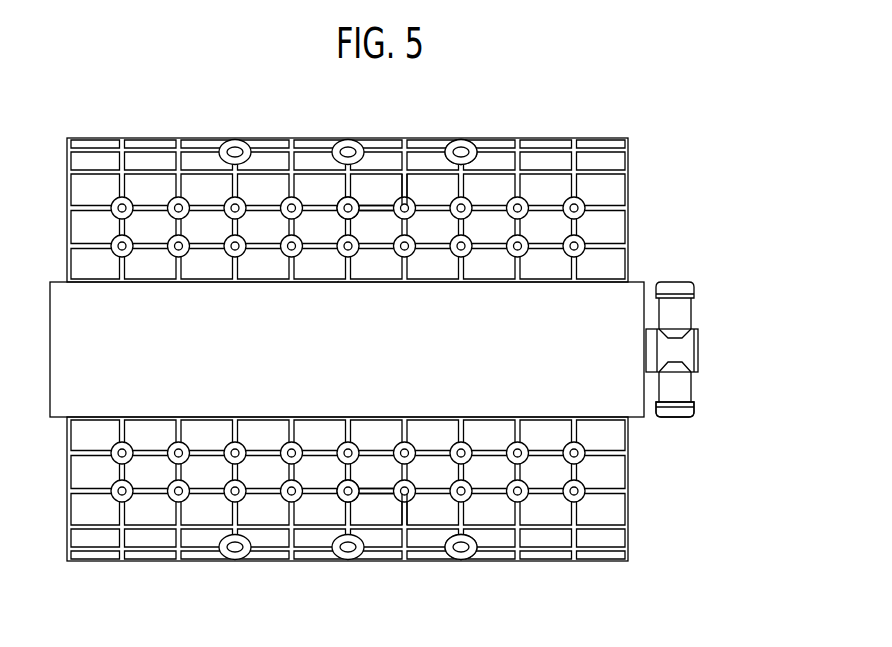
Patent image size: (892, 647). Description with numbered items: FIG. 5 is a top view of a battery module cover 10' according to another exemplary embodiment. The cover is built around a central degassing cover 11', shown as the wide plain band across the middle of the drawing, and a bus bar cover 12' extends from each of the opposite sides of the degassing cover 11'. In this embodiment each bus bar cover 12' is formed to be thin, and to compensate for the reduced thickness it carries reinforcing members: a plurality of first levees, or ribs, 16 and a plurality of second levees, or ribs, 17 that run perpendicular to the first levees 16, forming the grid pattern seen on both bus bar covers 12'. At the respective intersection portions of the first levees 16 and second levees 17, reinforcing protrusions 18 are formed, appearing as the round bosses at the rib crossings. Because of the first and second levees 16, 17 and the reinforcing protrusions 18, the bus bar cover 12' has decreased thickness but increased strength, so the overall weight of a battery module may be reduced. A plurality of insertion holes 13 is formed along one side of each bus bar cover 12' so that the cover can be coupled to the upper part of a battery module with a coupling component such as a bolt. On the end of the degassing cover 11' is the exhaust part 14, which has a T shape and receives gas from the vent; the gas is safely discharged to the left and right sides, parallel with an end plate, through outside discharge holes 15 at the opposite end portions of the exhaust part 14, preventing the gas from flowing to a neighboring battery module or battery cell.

The battery module cover 10' is at (413, 337).
The degassing cover 11' is at (376, 380).
The bus bar cover 12' is at (382, 349).
The insertion hole 13 is at (466, 152).
The exhaust part 14 is at (699, 304).
The outside discharge hole 15 is at (675, 421).
The first levee 16 is at (405, 188).
The second levee 17 is at (372, 207).
The reinforcing protrusion 18 is at (346, 207).